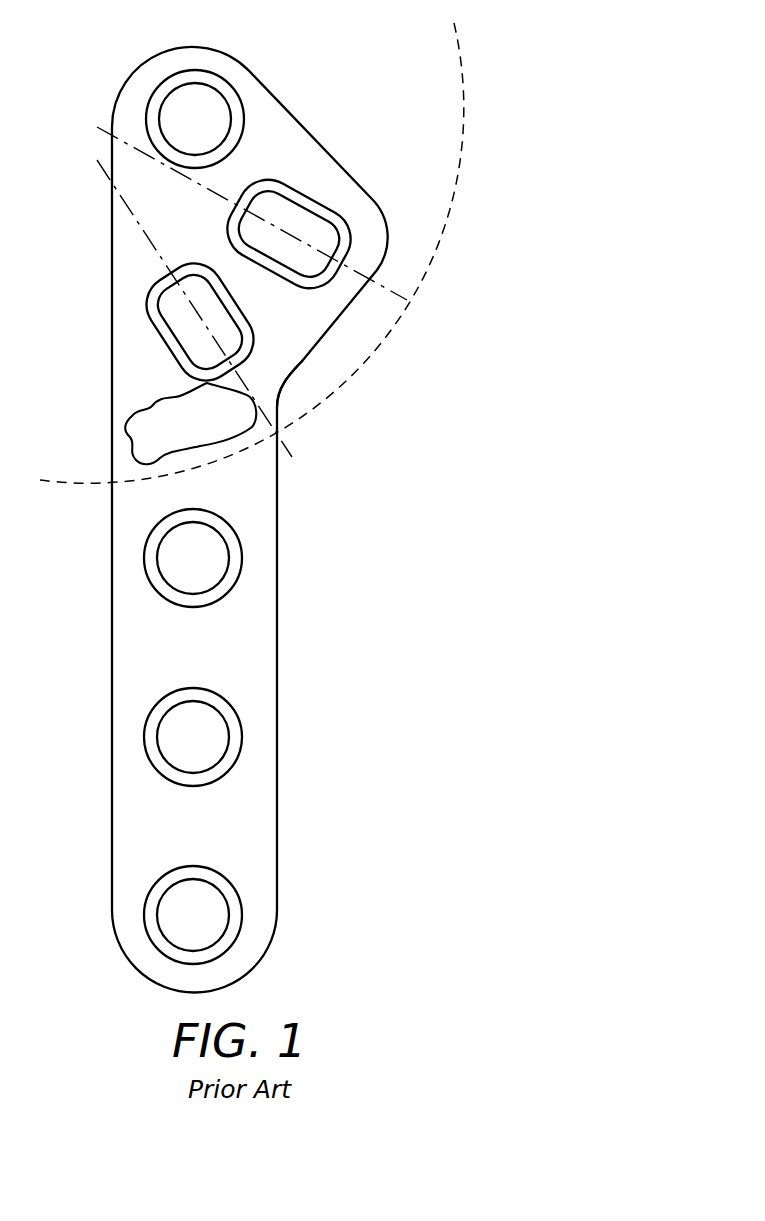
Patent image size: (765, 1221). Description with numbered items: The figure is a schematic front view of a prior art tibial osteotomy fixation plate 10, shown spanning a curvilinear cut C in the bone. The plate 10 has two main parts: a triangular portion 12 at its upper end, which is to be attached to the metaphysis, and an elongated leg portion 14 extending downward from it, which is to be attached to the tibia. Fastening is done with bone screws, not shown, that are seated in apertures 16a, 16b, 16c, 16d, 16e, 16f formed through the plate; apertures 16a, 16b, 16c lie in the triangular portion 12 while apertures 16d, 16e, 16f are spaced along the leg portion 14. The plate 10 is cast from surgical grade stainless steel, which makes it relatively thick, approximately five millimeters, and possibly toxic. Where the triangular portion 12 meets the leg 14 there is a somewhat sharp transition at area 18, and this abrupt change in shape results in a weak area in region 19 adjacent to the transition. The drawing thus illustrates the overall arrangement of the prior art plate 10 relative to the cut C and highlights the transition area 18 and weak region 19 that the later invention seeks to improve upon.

The tibial osteotomy fixation plate 10 is at (233, 519).
The triangular portion 12 is at (167, 221).
The leg portion 14 is at (92, 507).
The aperture 16a is at (193, 100).
The aperture 16b is at (312, 218).
The aperture 16c is at (167, 313).
The aperture 16d is at (167, 559).
The aperture 16e is at (167, 738).
The aperture 16f is at (167, 916).
The transition area 18 is at (280, 398).
The weak region 19 is at (143, 433).
The curvilinear cut C is at (454, 30).